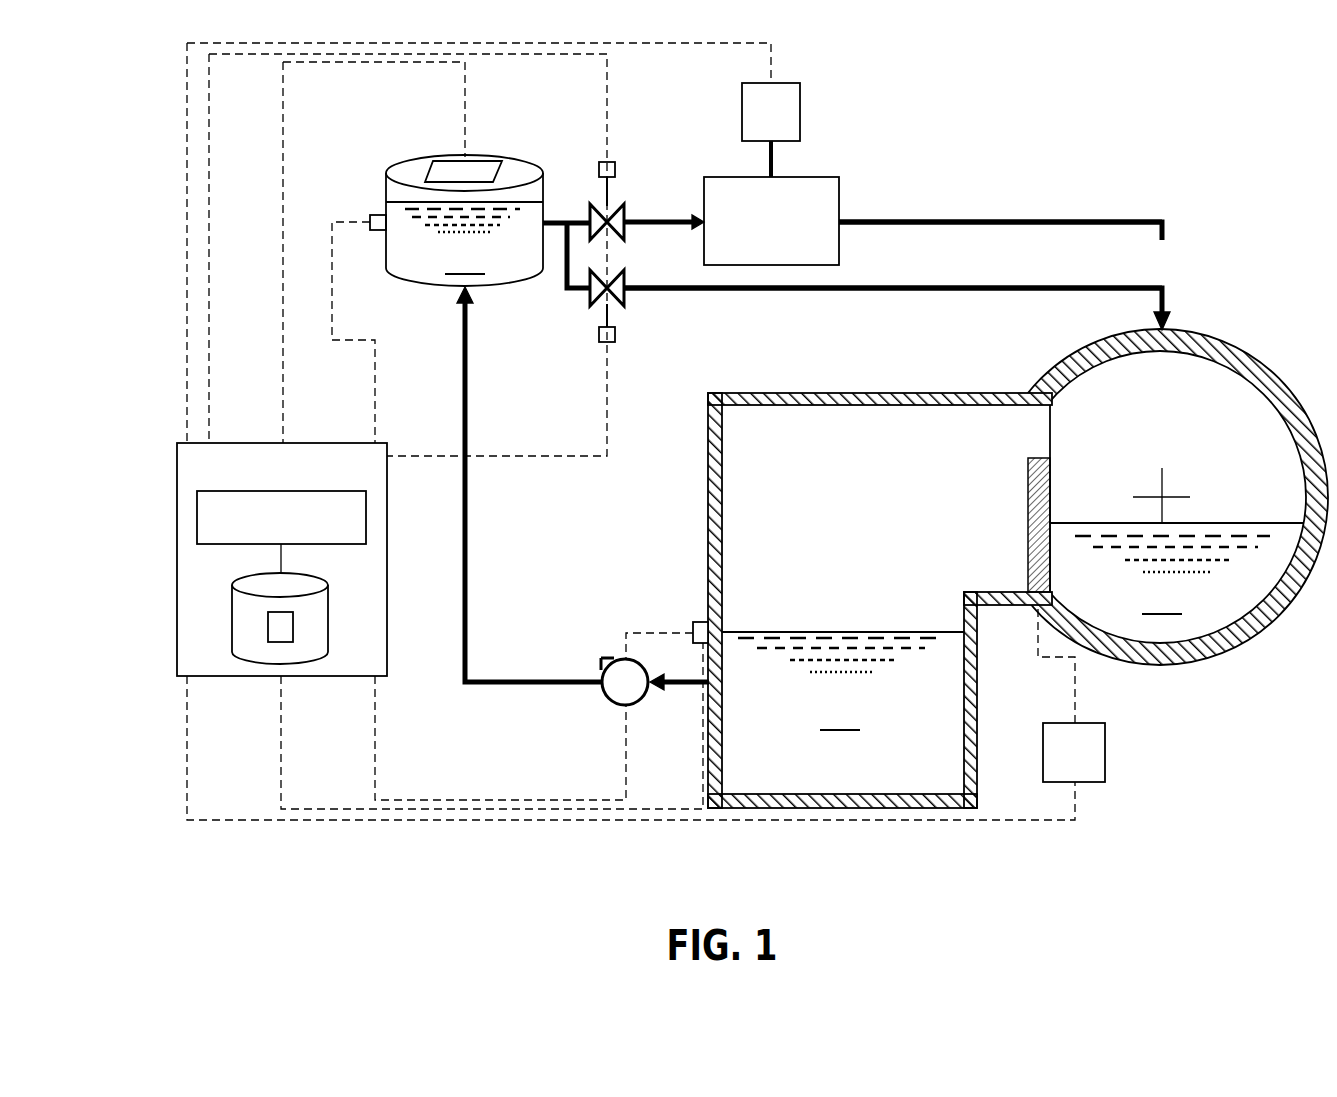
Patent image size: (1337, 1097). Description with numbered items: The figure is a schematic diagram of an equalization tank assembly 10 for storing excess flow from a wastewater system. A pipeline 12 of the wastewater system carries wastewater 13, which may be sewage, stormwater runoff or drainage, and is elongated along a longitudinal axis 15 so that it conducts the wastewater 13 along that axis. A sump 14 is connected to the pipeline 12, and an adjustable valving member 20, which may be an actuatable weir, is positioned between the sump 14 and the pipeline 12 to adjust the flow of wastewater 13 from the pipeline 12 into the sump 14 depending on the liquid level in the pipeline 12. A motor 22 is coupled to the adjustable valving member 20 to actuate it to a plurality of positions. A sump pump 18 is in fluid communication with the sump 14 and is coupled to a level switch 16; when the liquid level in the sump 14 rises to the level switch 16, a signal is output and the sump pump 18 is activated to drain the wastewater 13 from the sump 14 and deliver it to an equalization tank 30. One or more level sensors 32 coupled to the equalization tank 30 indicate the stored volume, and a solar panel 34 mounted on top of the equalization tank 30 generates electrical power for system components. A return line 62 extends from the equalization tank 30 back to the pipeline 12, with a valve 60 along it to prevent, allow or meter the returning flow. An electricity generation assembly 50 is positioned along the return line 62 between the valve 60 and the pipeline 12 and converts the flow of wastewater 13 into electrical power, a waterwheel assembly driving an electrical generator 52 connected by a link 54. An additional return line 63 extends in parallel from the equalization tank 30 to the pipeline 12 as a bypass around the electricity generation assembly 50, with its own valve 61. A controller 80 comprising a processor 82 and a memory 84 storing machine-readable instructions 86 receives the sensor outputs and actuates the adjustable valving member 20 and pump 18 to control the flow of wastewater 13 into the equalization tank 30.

The equalization tank assembly 10 is at (1132, 178).
The pipeline 12 is at (1238, 345).
The wastewater 13 is at (845, 466).
The sump 14 is at (709, 510).
The longitudinal axis 15 is at (1175, 493).
The level switch 16 is at (693, 622).
The sump pump 18 is at (613, 658).
The adjustable valving member 20 is at (1028, 535).
The motor 22 is at (1105, 748).
The equalization tank 30 is at (386, 182).
The level sensor 32 is at (378, 232).
The solar panel 34 is at (493, 160).
The electricity generation assembly 50 is at (752, 237).
The electrical generator 52 is at (800, 113).
The gas line 54 is at (773, 160).
The valve 60 is at (617, 167).
The valve 61 is at (615, 335).
The return line 62 is at (955, 220).
The additional return line 63 is at (897, 290).
The controller 80 is at (330, 443).
The processor 82 is at (366, 518).
The memory 84 is at (236, 580).
The machine-readable instructions 86 is at (293, 628).